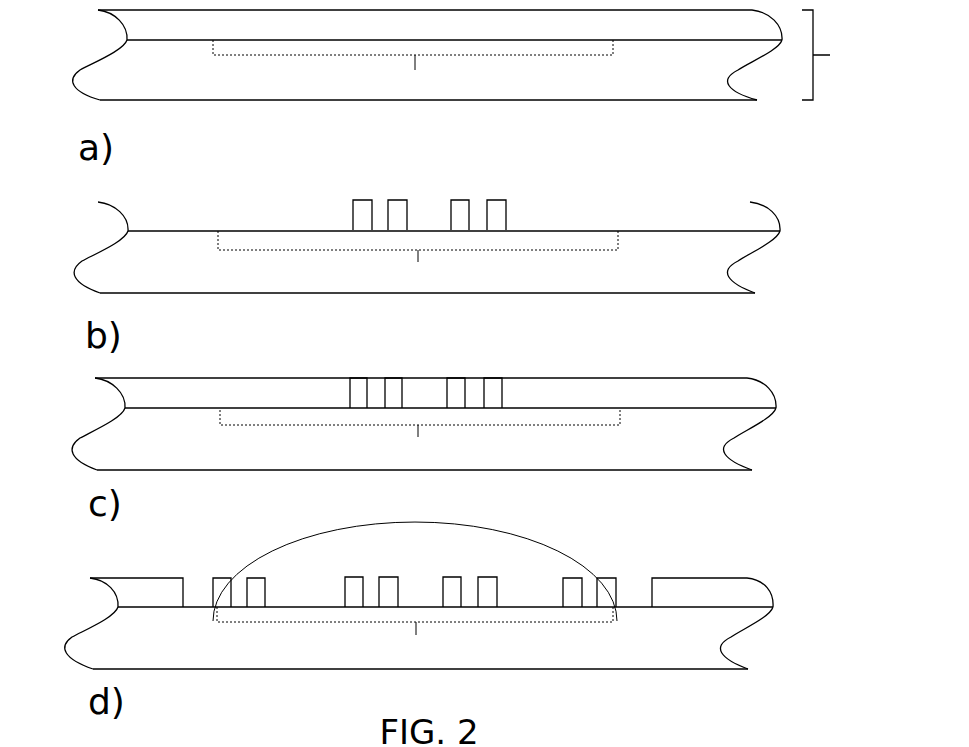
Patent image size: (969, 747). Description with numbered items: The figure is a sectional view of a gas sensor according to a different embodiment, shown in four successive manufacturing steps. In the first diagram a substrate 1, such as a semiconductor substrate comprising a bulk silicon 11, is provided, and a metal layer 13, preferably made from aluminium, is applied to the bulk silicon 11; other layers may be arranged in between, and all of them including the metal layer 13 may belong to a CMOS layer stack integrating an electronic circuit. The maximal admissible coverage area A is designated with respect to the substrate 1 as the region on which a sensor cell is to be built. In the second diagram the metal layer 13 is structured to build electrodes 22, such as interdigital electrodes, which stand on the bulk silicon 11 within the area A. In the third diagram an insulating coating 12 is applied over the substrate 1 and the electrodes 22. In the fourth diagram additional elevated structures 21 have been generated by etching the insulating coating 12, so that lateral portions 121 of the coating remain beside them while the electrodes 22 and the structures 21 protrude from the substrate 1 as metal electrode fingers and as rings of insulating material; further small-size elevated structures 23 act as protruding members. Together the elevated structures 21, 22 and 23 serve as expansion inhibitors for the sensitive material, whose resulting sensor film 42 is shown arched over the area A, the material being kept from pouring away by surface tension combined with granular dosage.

The substrate 1 is at (832, 55).
The bulk silicon 11 is at (423, 354).
The insulating coating 12 is at (435, 395).
The metal layer 13 is at (440, 27).
The additional elevated structures 21 is at (260, 578).
The electrodes 22 is at (502, 200).
The small-size elevated structures 23 is at (614, 580).
The sensor film 42 is at (517, 557).
The contact pad 121 is at (127, 595).
The maximal admissible coverage area A is at (416, 355).